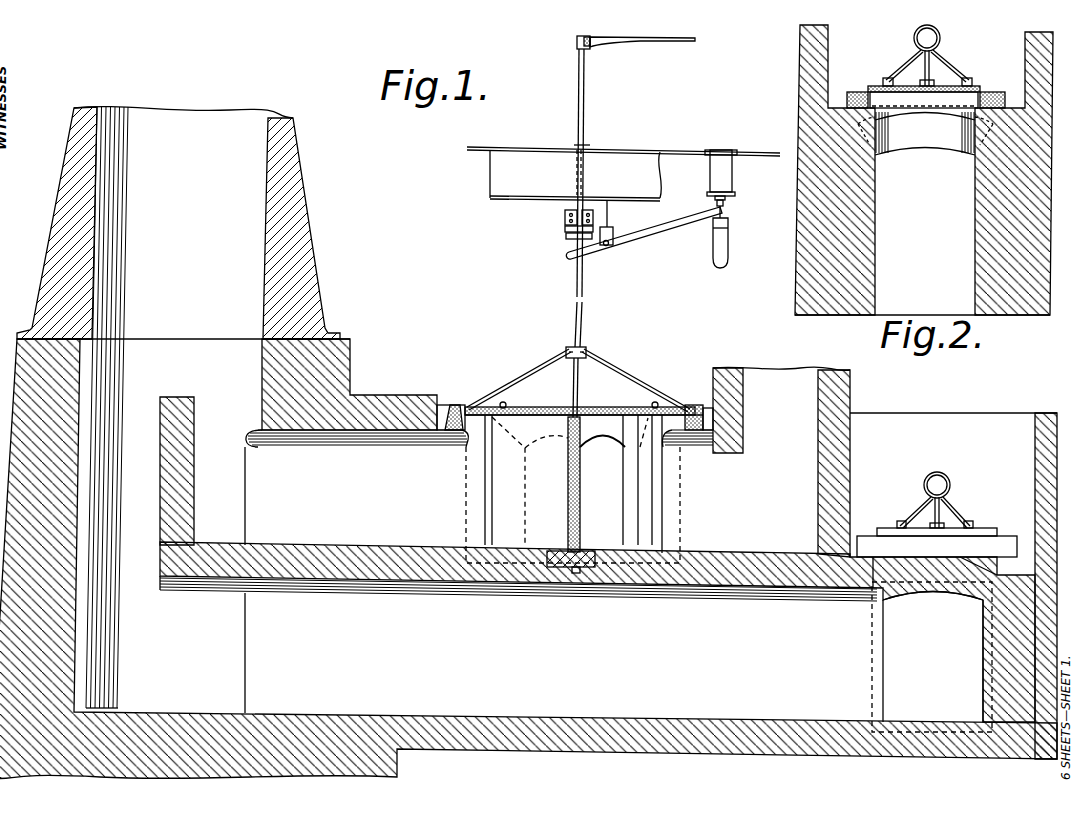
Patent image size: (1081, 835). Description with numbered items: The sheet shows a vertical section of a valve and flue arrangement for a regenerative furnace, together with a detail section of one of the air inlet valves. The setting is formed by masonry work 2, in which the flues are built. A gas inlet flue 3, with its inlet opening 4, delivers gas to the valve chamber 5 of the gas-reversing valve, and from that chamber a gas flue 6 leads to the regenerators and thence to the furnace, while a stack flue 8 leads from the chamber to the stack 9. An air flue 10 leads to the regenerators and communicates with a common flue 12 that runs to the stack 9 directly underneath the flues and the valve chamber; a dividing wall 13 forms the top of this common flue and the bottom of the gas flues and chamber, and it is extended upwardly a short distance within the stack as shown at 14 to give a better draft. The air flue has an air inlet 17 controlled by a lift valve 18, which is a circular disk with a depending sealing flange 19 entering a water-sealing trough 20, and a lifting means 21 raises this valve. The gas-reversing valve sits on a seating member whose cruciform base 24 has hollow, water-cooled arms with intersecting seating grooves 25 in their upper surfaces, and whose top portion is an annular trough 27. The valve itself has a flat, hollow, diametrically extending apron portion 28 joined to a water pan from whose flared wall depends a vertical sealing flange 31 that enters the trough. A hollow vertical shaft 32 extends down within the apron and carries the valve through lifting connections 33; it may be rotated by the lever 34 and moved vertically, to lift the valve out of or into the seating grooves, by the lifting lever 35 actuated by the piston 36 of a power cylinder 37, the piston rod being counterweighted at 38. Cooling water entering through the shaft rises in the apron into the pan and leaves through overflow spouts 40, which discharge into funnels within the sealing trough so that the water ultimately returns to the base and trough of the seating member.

In FIG. 1, the masonry work 2 is at (1037, 735).
In FIG. 1, the gas inlet flue 3 is at (740, 489).
In FIG. 1, the inlet opening 4 is at (781, 462).
In FIG. 1, the valve chamber 5 is at (584, 489).
In FIG. 1, the gas flue 6 is at (600, 444).
In FIG. 1, the stack flue 8 is at (355, 496).
In FIG. 1, the stack 9 is at (227, 407).
In FIG. 1, the air flue 10 is at (932, 644).
In FIG. 2, the air flue 10 is at (924, 170).
In FIG. 1, the common flue 12 is at (495, 653).
In FIG. 1, the dividing wall 13 is at (384, 574).
In FIG. 1, the upward extension of dividing wall 14 is at (172, 474).
In FIG. 2, the air inlet 17 is at (925, 132).
In FIG. 1, the lift valve 18 is at (975, 534).
In FIG. 2, the lift valve 18 is at (946, 85).
In FIG. 2, the sealing flange 19 is at (989, 91).
In FIG. 1, the water-sealing trough 20 is at (937, 555).
In FIG. 2, the water-sealing trough 20 is at (856, 91).
In FIG. 1, the lifting means 21 is at (951, 499).
In FIG. 2, the lifting means 21 is at (916, 74).
In FIG. 1, the cruciform base 24 is at (561, 569).
In FIG. 1, the seating grooves 25 is at (585, 569).
In FIG. 1, the annular trough 27 is at (450, 404).
In FIG. 1, the apron portion 28 is at (562, 470).
In FIG. 1, the sealing flange 31 is at (455, 433).
In FIG. 1, the vertical shaft 32 is at (573, 366).
In FIG. 1, the lifting connections 33 is at (622, 376).
In FIG. 1, the lever 34 is at (624, 39).
In FIG. 1, the lifting lever 35 is at (661, 235).
In FIG. 1, the piston 36 is at (727, 201).
In FIG. 1, the power cylinder 37 is at (731, 173).
In FIG. 1, the counterweight 38 is at (729, 243).
In FIG. 1, the overflow spouts 40 is at (503, 402).